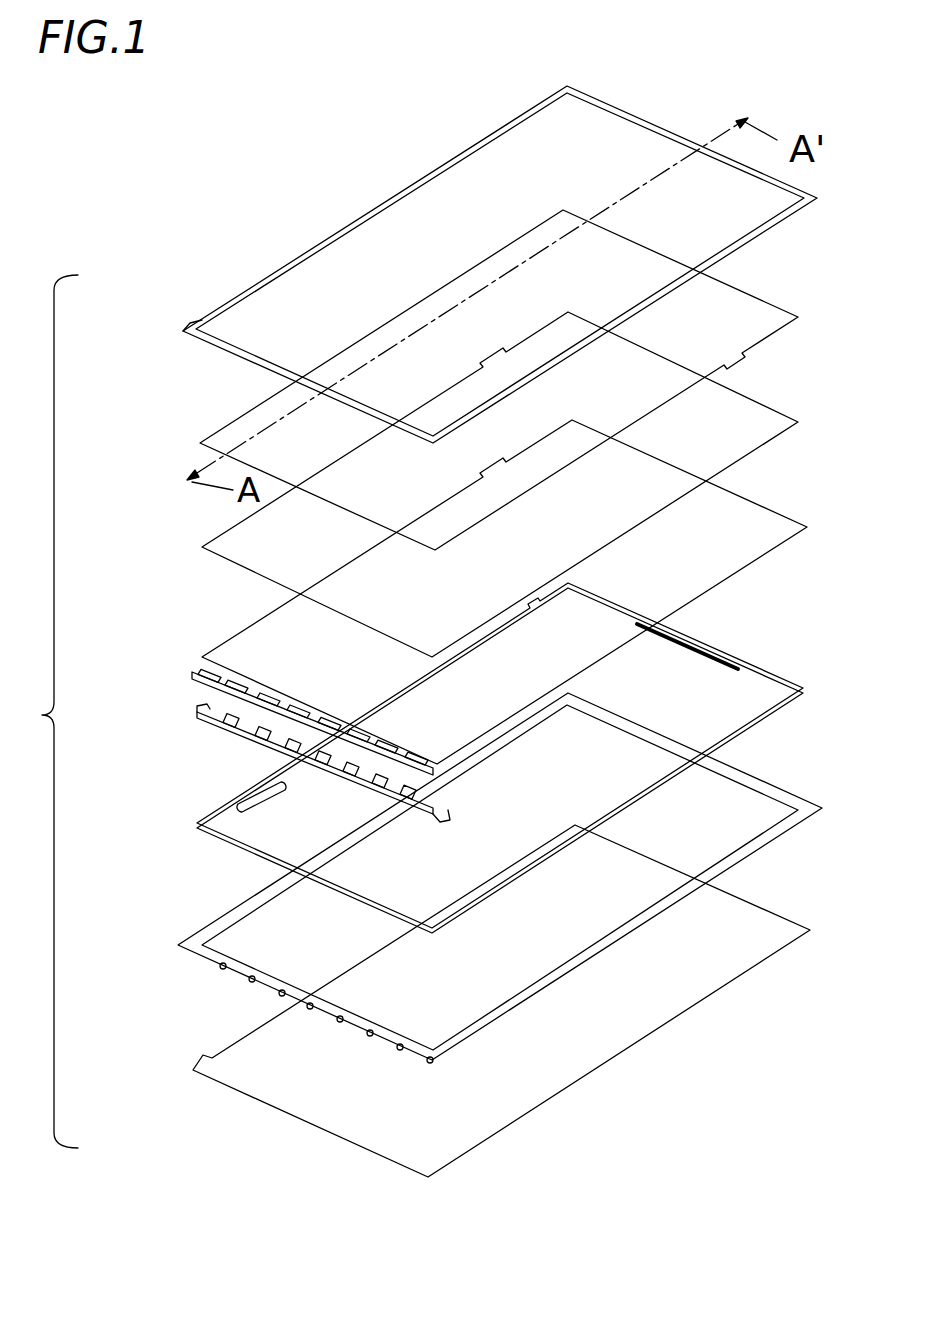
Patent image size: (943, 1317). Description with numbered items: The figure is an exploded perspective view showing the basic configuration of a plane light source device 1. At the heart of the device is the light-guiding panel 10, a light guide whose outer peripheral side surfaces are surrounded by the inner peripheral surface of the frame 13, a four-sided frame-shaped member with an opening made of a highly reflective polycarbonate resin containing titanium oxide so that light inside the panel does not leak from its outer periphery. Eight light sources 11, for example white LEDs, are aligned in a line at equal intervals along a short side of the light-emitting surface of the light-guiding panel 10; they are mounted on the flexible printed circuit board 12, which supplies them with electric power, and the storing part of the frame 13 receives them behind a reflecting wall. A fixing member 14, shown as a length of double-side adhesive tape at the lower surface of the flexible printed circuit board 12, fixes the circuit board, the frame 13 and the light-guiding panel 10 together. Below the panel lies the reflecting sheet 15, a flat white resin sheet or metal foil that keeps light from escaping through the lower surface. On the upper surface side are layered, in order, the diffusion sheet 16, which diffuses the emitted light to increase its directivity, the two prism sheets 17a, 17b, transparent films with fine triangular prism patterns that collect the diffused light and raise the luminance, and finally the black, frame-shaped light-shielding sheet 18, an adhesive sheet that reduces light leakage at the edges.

The plane light source device 1 is at (44, 711).
The light-shielding sheet 18 is at (188, 330).
The prism sheet 17a is at (222, 436).
The prism sheet 17b is at (237, 530).
The diffusion sheet 16 is at (223, 641).
The flexible printed circuit board (FPC) 12 is at (193, 675).
The light source 11 is at (202, 708).
The fixing member 14 is at (197, 718).
The light-guiding panel 10 is at (273, 832).
The frame 13 is at (247, 897).
The reflecting sheet 15 is at (193, 1066).